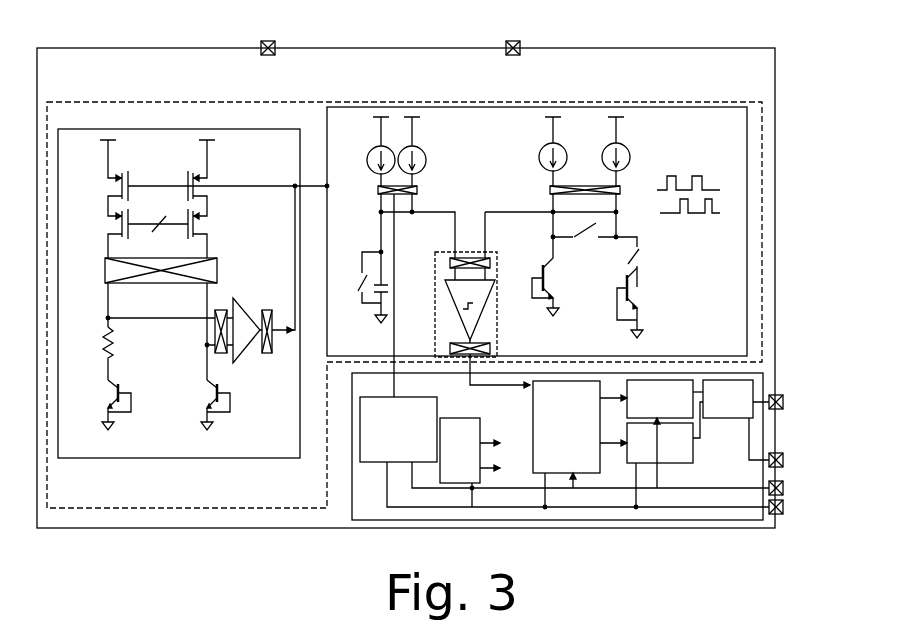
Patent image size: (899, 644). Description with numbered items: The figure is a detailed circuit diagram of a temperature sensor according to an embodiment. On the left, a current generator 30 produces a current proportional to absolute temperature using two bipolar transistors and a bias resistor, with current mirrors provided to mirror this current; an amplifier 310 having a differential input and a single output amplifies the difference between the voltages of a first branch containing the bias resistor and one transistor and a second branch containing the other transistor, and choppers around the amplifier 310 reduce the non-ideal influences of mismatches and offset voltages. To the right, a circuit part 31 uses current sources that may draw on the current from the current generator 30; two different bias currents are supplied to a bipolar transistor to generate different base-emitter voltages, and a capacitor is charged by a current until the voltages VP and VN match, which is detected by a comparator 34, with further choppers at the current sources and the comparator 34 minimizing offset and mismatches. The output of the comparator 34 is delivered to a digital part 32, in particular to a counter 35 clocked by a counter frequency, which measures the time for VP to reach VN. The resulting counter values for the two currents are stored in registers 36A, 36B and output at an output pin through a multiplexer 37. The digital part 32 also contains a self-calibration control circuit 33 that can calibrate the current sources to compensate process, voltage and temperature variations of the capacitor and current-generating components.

The current generator 30 is at (62, 103).
The circuit part 31 is at (747, 150).
The digital part 32 is at (372, 520).
The self-calibration control circuit 33 is at (378, 463).
The comparator 34 is at (493, 301).
The counter 35 is at (590, 473).
The register 36A is at (700, 418).
The register 36B is at (663, 463).
The multiplexer 37 is at (763, 380).
The amplifier 310 is at (246, 299).